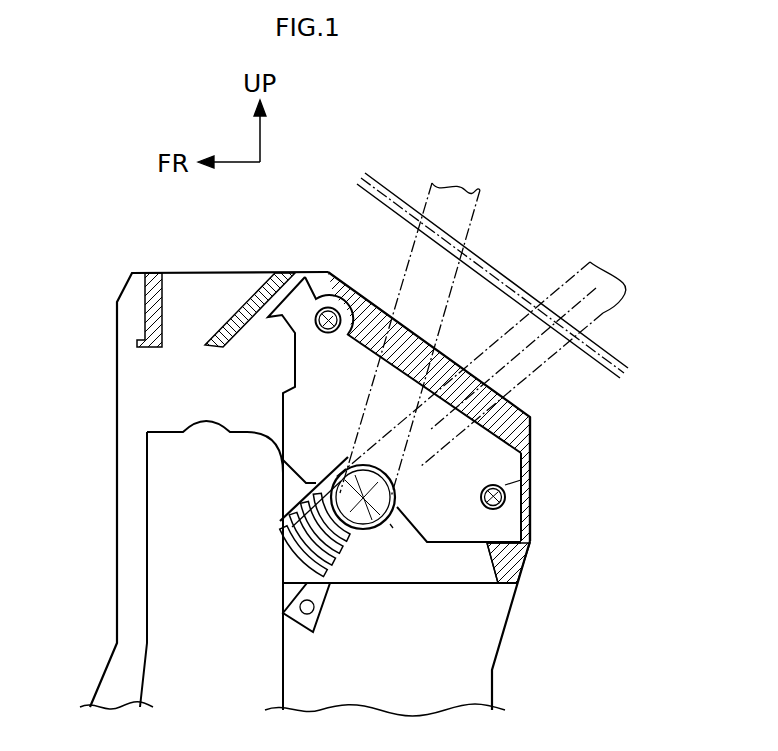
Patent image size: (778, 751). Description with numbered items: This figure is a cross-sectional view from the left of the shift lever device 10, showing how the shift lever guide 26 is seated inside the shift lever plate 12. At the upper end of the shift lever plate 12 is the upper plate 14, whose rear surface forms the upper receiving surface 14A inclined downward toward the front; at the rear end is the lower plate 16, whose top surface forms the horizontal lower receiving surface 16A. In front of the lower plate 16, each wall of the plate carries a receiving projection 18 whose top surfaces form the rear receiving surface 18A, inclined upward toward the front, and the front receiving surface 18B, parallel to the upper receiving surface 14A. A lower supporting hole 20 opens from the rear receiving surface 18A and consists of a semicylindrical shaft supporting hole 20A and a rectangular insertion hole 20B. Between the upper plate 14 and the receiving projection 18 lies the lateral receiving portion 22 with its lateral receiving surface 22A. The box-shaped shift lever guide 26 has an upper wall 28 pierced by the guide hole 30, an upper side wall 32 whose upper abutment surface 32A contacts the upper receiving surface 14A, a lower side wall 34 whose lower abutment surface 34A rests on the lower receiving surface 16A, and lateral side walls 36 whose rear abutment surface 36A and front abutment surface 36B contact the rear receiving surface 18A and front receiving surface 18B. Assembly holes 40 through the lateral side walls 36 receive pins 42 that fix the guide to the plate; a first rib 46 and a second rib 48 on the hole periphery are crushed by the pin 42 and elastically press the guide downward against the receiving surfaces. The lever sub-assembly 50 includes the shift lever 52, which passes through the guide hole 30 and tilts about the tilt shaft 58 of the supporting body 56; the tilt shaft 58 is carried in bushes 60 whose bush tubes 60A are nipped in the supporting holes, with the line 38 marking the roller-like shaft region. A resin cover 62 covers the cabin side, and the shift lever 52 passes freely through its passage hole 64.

The shift lever device 10 is at (94, 192).
The shift lever plate 12 is at (113, 295).
The upper plate 14 is at (218, 330).
The upper receiving surface 14A is at (233, 340).
The lower plate 16 is at (518, 563).
The lower receiving surface 16A is at (527, 543).
The receiving projection 18 is at (430, 584).
The rear receiving surface 18A is at (417, 536).
The front receiving surface 18B is at (292, 500).
The lower supporting hole 20 is at (340, 474).
The shaft supporting hole 20A is at (366, 530).
The insertion hole 20B is at (392, 524).
The lateral receiving portion 22 is at (283, 395).
The lateral receiving surface 22A is at (258, 432).
The shift lever guide 26 is at (537, 413).
The upper wall 28 is at (362, 288).
The guide hole 30 is at (398, 318).
The upper side wall 32 is at (246, 323).
The upper abutment surface 32A is at (267, 283).
The lower side wall 34 is at (530, 495).
The lower abutment surface 34A is at (489, 546).
The lateral side wall 36 is at (523, 457).
The rear abutment surface 36A is at (492, 545).
The front abutment surface 36B is at (288, 475).
The roller axis 38 is at (365, 468).
The assembly hole 40 is at (323, 307).
The pin 42 is at (312, 333).
The first rib 46 is at (323, 332).
The second rib 48 is at (334, 333).
The lever sub-assembly 50 is at (501, 307).
The shift lever 52 is at (428, 194).
The supporting body 56 is at (263, 529).
The tilt shaft 58 is at (290, 529).
The bush 60 is at (255, 541).
The bush tube 60A is at (300, 553).
The cover 62 is at (495, 275).
The passage hole 64 is at (586, 326).